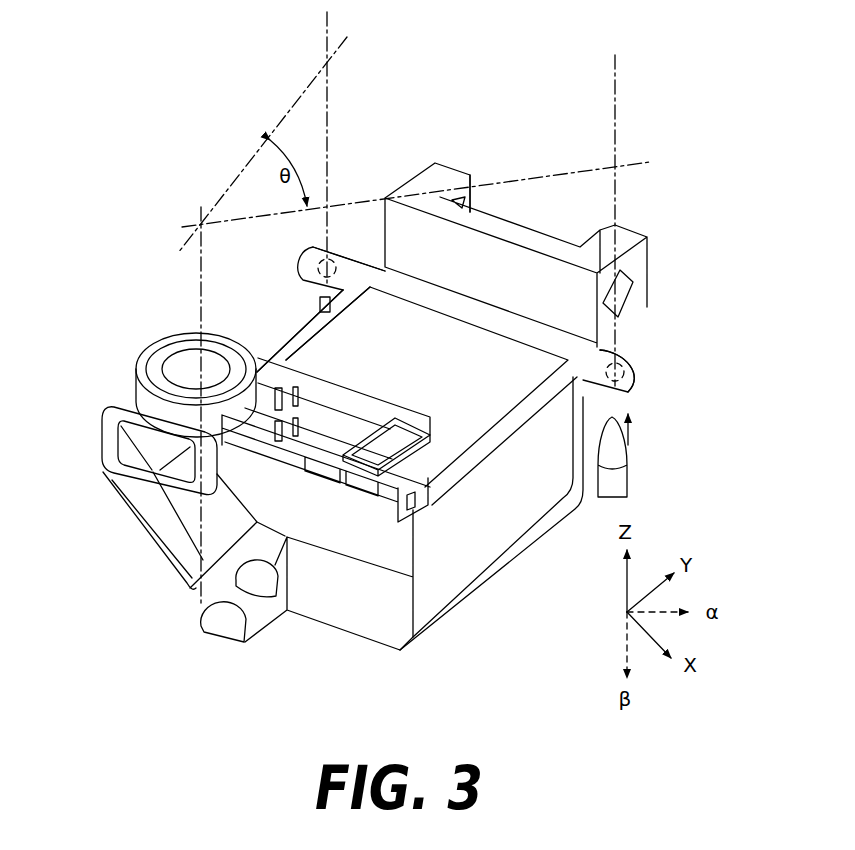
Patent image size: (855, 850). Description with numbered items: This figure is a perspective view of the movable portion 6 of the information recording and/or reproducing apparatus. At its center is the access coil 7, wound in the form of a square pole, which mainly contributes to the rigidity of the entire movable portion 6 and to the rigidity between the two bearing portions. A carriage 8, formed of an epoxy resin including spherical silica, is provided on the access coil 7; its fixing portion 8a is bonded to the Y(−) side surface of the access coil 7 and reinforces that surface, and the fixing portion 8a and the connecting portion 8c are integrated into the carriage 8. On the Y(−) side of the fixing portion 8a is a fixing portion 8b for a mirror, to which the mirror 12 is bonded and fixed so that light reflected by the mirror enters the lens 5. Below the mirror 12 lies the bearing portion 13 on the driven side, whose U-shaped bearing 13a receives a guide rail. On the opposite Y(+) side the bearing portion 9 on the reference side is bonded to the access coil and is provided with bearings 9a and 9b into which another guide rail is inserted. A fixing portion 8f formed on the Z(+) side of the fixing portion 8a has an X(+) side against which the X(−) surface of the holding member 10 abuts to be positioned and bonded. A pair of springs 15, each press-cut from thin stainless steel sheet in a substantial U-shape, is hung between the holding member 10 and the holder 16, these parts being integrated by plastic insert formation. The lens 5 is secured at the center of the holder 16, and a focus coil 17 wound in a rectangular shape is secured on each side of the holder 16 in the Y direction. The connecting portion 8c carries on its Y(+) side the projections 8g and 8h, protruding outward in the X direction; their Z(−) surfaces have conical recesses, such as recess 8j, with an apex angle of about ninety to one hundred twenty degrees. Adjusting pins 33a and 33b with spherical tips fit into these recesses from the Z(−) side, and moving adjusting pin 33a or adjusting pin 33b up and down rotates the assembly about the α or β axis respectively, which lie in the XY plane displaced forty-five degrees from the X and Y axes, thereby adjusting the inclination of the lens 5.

The lens 5 is at (177, 348).
The movable portion 6 is at (505, 605).
The access coil 7 is at (262, 355).
The carriage 8 is at (403, 448).
The fixing portion 8a is at (347, 547).
The fixing portion for a mirror 8b is at (160, 547).
The connecting portion 8c is at (298, 333).
The fixing portion 8f is at (412, 427).
The projection 8g is at (337, 255).
The projection 8h is at (630, 360).
The conical recess 8j is at (303, 280).
The bearing portion on a reference side 9 is at (430, 168).
The bearing 9a is at (466, 204).
The bearing 9b is at (633, 282).
The holding member 10 is at (447, 482).
The mirror 12 is at (153, 524).
The bearing portion on a driven side 13 is at (220, 632).
The U-shaped bearing 13a is at (200, 600).
The spring 15 is at (347, 433).
The holder 16 is at (137, 382).
The focus coil 17 is at (100, 447).
The adjusting pin 33a is at (318, 300).
The adjusting pin 33b is at (620, 456).